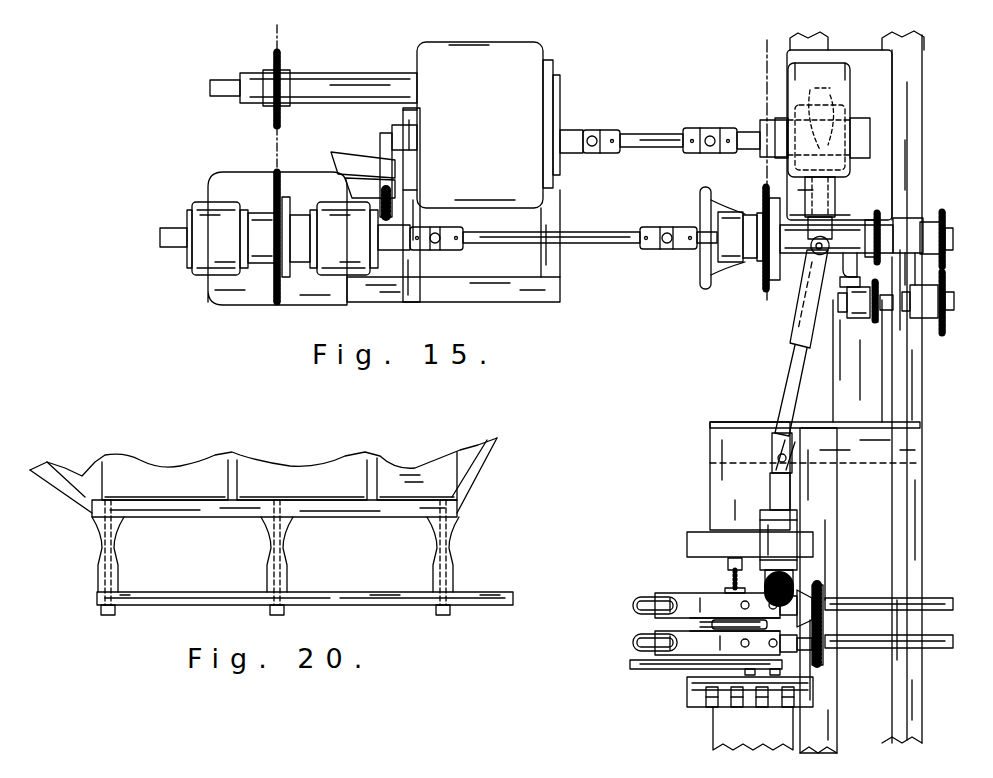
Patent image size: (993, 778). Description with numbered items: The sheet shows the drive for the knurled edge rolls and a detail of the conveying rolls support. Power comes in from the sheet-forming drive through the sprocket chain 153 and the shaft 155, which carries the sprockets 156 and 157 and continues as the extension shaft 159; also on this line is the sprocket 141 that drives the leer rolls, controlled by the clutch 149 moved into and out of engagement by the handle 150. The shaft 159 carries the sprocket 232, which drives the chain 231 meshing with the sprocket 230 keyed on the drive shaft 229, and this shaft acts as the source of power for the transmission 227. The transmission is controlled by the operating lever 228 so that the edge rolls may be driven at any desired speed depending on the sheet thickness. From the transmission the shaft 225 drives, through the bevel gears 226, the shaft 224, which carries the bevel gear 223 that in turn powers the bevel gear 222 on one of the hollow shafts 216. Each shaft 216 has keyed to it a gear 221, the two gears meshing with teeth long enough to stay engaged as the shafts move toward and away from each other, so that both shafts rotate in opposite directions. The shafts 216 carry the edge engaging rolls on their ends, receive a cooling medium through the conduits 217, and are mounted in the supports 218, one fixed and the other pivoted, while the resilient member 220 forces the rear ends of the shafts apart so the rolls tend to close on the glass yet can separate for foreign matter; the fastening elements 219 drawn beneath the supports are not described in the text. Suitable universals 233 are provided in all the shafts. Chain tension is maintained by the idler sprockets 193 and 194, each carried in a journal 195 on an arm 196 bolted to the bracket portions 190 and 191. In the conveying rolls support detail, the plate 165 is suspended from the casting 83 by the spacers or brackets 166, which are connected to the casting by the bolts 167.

In FIG. 15, the transmission 227 is at (495, 65).
In FIG. 15, the drive shaft 229 is at (207, 88).
In FIG. 15, the sprocket 230 is at (280, 58).
In FIG. 15, the chain 231 is at (274, 154).
In FIG. 15, the operating lever 228 is at (378, 162).
In FIG. 15, the sprocket 232 is at (283, 298).
In FIG. 15, the universals 233 is at (648, 252).
In FIG. 15, the shaft 159 is at (612, 235).
In FIG. 15, the handle 150 is at (705, 272).
In FIG. 15, the clutch 149 is at (698, 200).
In FIG. 15, the sprocket 141 is at (762, 190).
In FIG. 15, the sprocket chain 153 is at (766, 60).
In FIG. 15, the shaft 225 is at (655, 133).
In FIG. 15, the bevel gears 226 is at (812, 102).
In FIG. 15, the sprocket 156 is at (869, 220).
In FIG. 15, the shaft 155 is at (862, 227).
In FIG. 15, the portion of bracket 190 is at (928, 240).
In FIG. 15, the sprocket 157 is at (946, 228).
In FIG. 15, the portion of bracket 191 is at (850, 262).
In FIG. 15, the journal 195 is at (858, 318).
In FIG. 15, the idler sprocket 194 is at (876, 324).
In FIG. 15, the idler sprocket 193 is at (937, 332).
In FIG. 15, the arm 196 is at (812, 282).
In FIG. 15, the shaft 224 is at (790, 372).
In FIG. 15, the bevel gear 222 is at (805, 598).
In FIG. 15, the bevel gear 223 is at (757, 585).
In FIG. 15, the gear 221 is at (815, 632).
In FIG. 15, the conduits 217 is at (652, 594).
In FIG. 15, the resilient member 220 is at (712, 625).
In FIG. 15, the shafts 216 is at (950, 608).
In FIG. 15, the supports 218 is at (718, 610).
In FIG. 15, the bolts 219 is at (748, 694).
In FIG. 20, the casting 83 is at (393, 470).
In FIG. 20, the spacers or brackets 166 is at (110, 548).
In FIG. 20, the plate 165 is at (500, 606).
In FIG. 20, the bolts 167 is at (113, 612).